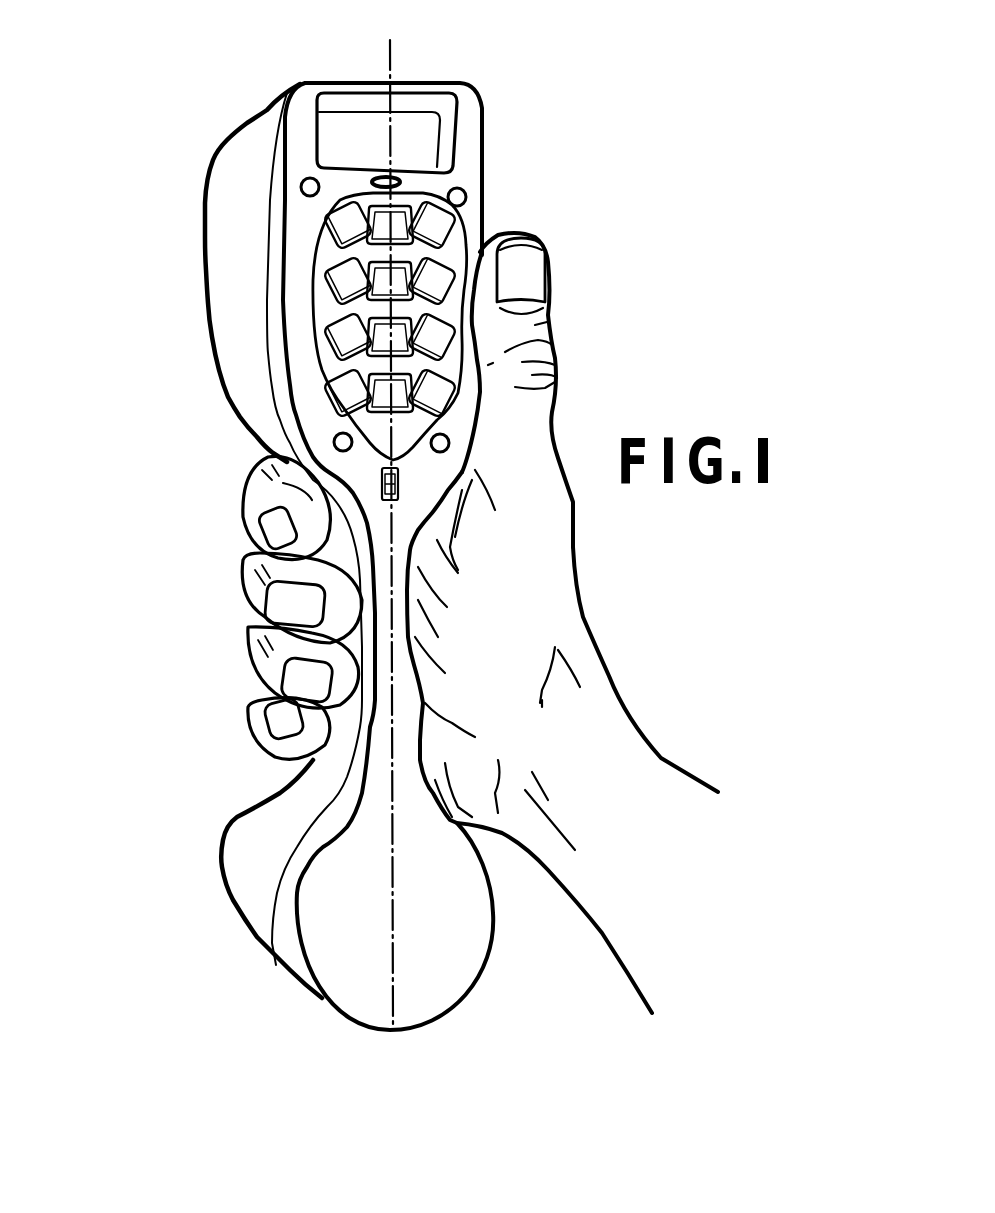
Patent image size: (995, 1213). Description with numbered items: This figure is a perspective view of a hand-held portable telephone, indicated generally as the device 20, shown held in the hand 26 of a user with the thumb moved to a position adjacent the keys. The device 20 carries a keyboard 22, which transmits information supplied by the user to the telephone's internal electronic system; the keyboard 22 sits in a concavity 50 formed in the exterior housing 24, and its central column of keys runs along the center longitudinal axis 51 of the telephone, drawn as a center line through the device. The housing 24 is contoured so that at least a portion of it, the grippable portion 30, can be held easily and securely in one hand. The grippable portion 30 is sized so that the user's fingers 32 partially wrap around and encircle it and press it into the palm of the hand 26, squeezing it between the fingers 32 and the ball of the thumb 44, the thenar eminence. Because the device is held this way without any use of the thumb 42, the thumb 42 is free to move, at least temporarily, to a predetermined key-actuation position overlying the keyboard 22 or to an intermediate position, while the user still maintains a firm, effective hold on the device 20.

The hand-held device 20 is at (158, 225).
The keyboard 22 is at (460, 220).
The exterior housing 24 is at (252, 153).
The hand 26 is at (522, 595).
The grippable portion 30 is at (338, 562).
The fingers 32 is at (268, 655).
The thumb 42 is at (550, 321).
The ball of the thumb 44 is at (396, 557).
The concavity 50 is at (335, 413).
The center longitudinal axis 51 is at (397, 70).